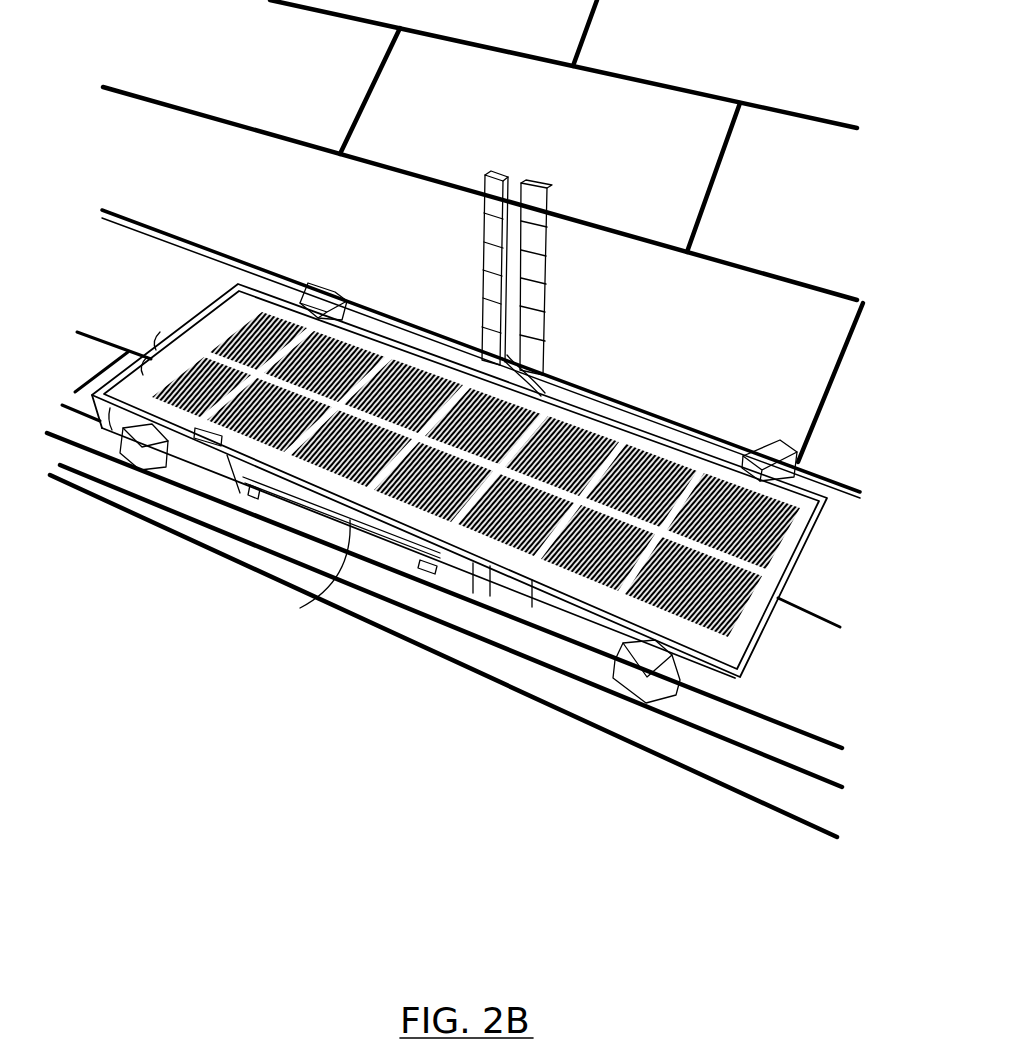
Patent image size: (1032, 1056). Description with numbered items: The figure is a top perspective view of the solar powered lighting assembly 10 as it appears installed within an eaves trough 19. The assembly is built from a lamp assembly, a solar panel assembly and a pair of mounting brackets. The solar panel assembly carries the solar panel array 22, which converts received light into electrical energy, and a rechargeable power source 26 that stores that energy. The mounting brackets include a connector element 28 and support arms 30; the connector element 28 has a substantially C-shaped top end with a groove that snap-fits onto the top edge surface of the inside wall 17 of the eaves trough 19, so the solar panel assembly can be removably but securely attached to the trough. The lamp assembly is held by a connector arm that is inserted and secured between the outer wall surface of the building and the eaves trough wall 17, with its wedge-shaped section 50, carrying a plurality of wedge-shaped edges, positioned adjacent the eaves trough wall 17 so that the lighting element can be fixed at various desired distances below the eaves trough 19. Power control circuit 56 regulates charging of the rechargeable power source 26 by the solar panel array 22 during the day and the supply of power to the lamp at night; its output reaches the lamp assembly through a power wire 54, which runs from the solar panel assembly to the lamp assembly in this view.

The solar powered lighting assembly 10 is at (413, 607).
The inside wall of eaves trough 17 is at (267, 277).
The eaves trough 19 is at (183, 302).
The solar panel array 22 is at (376, 352).
The rechargeable power source 26 is at (150, 362).
The connector element 28 is at (767, 445).
The support arms 30 is at (143, 447).
The wedge-shaped section 50 is at (531, 278).
The power wire 54 is at (533, 357).
The power control circuit 56 is at (300, 608).